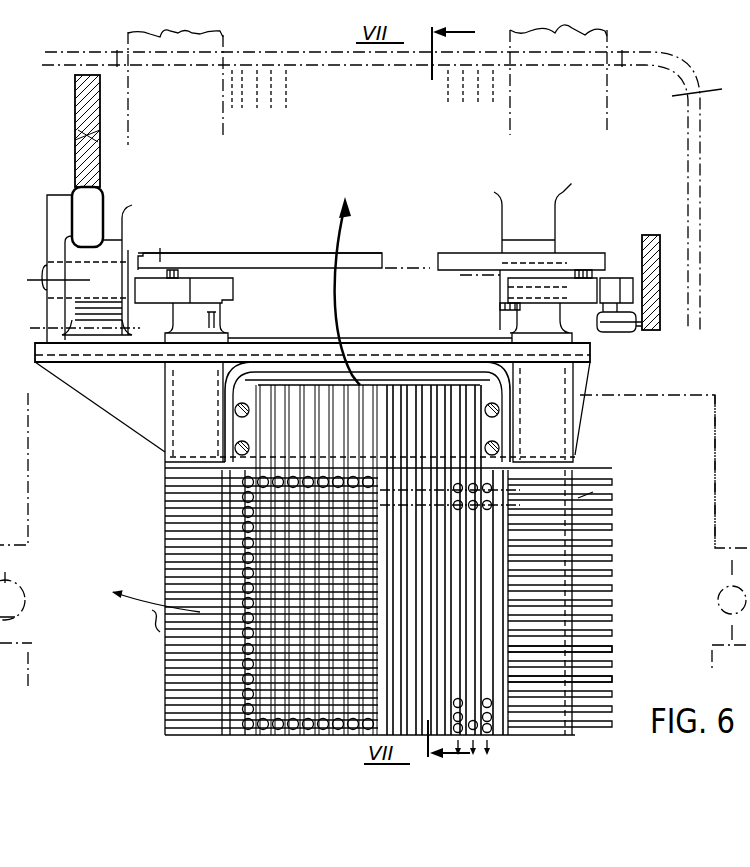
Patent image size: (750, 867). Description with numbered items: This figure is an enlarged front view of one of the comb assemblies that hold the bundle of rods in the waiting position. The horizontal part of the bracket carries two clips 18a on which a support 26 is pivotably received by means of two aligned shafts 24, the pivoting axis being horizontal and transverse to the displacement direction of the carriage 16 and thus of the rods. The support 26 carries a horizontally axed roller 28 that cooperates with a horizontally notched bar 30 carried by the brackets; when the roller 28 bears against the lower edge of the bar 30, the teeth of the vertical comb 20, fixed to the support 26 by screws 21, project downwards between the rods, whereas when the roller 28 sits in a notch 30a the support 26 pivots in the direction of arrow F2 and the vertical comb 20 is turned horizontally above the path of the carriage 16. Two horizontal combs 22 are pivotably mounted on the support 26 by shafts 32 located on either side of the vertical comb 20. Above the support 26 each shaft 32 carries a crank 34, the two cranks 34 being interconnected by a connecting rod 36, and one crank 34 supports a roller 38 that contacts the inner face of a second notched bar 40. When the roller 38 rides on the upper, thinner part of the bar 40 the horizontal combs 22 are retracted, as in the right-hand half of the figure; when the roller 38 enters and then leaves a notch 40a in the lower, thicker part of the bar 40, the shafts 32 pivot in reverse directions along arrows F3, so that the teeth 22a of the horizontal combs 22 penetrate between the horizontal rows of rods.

The carriage 16 is at (719, 467).
The clips 18a is at (118, 255).
The vertical comb 20 is at (555, 447).
The screws 21 is at (498, 410).
The horizontal combs 22 is at (621, 539).
The teeth of the horizontal combs 22a is at (608, 695).
The aligned shafts 24 is at (45, 292).
The support 26 is at (100, 378).
The roller 28 is at (103, 210).
The notched bar 30 is at (85, 75).
The notch 30a is at (107, 151).
The shafts 32 is at (217, 325).
The cranks 34 is at (215, 283).
The connecting rod 36 is at (302, 256).
The roller 38 is at (594, 317).
The second notched bar 40 is at (655, 235).
The notch 40a is at (637, 336).
The arrow F2 is at (337, 311).
The arrows F3 is at (156, 619).